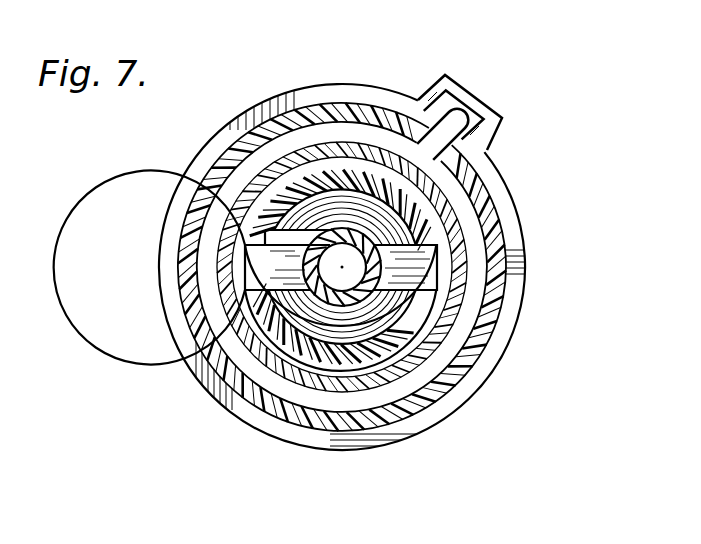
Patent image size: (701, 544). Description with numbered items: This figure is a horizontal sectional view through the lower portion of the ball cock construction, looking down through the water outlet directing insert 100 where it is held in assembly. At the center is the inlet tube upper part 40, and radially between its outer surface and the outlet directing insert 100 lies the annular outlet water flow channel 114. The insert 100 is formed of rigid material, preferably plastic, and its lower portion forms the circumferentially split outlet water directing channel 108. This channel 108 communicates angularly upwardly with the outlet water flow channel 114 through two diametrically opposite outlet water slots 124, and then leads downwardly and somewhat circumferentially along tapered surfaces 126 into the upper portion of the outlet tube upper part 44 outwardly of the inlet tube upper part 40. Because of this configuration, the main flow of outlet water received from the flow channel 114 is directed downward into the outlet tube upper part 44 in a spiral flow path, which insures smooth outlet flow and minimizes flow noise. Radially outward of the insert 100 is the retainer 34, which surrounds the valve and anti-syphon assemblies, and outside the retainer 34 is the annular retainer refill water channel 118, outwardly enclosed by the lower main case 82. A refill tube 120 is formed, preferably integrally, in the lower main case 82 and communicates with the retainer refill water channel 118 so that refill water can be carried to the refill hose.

The retainer 34 is at (183, 309).
The inlet tube upper part 40 is at (363, 297).
The outlet tube upper part 44 is at (440, 198).
The lower main case 82 is at (250, 390).
The water outlet directing insert 100 is at (410, 209).
The outlet water directing channel 108 is at (347, 157).
The outlet water flow channel 114 is at (297, 315).
The retainer refill water channel 118 is at (260, 220).
The refill tube 120 is at (448, 98).
The outlet water slots 124 is at (262, 262).
The tapered surfaces 126 is at (233, 207).